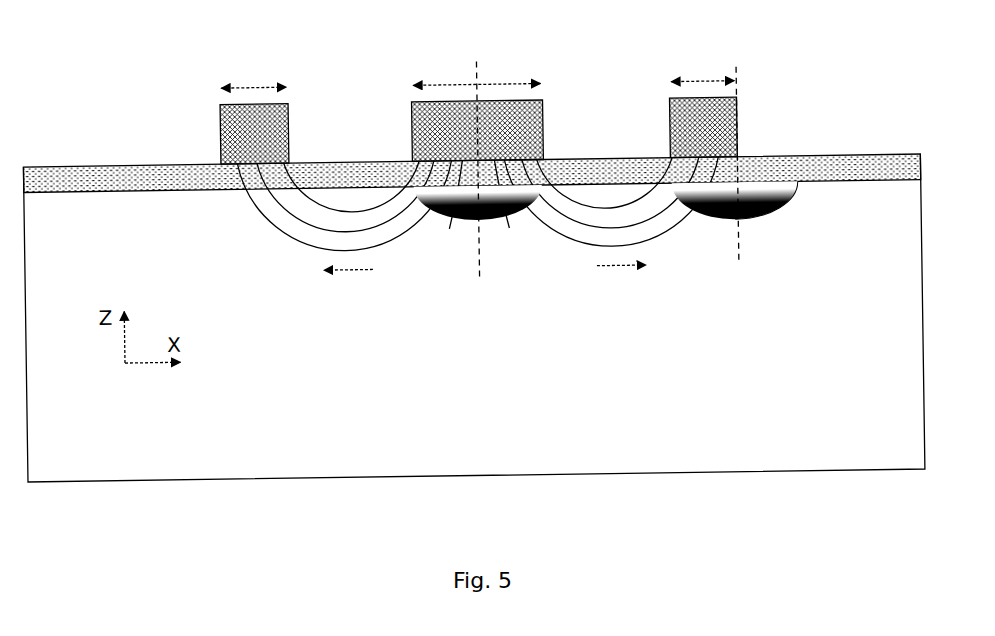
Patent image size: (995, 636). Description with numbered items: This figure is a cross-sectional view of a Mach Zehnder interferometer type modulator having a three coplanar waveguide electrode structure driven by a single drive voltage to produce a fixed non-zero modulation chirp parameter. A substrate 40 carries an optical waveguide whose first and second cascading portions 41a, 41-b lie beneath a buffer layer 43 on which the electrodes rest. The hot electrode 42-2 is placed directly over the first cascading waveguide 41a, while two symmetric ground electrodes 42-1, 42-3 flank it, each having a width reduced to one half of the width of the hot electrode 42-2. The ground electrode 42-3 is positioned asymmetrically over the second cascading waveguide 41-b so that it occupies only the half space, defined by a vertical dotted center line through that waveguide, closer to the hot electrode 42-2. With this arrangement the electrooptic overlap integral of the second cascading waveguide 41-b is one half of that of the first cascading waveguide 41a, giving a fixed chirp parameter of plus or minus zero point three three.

The substrate 40 is at (53, 457).
The buffer layer 43 is at (44, 182).
The ground electrode 42-1 is at (275, 134).
The hot electrode 42-2 is at (532, 142).
The ground electrode 42-3 is at (723, 140).
The first cascading waveguide 41a is at (457, 229).
The second cascading waveguide 41-b is at (772, 228).